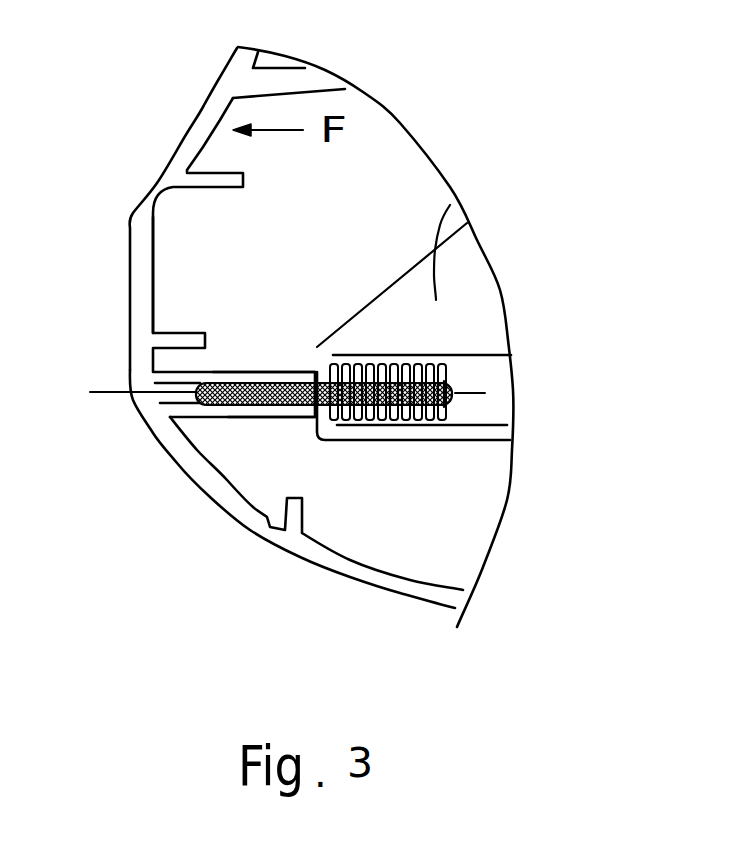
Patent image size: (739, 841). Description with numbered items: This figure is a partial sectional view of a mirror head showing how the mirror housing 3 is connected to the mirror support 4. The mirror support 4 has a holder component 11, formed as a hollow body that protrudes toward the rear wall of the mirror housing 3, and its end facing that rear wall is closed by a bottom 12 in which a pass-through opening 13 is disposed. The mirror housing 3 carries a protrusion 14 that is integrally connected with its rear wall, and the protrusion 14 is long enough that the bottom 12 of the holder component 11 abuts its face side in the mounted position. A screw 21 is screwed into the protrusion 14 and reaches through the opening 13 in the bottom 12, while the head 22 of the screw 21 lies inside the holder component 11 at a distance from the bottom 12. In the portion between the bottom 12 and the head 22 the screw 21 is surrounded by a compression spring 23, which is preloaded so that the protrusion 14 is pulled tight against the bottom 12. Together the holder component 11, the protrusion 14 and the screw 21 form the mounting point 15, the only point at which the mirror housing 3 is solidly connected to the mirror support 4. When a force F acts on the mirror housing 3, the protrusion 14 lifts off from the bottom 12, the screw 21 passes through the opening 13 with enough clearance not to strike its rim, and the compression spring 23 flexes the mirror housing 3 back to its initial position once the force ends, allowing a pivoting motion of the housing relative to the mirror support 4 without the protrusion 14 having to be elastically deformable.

The mirror housing 3 is at (202, 128).
The mirror support 4 is at (463, 188).
The holder component 11 is at (413, 433).
The bottom 12 is at (276, 421).
The pass-through opening 13 is at (313, 373).
The protrusion 14 is at (242, 373).
The mounting point 15 is at (313, 418).
The screw 21 is at (208, 405).
The head 22 is at (453, 387).
The compression spring 23 is at (400, 365).